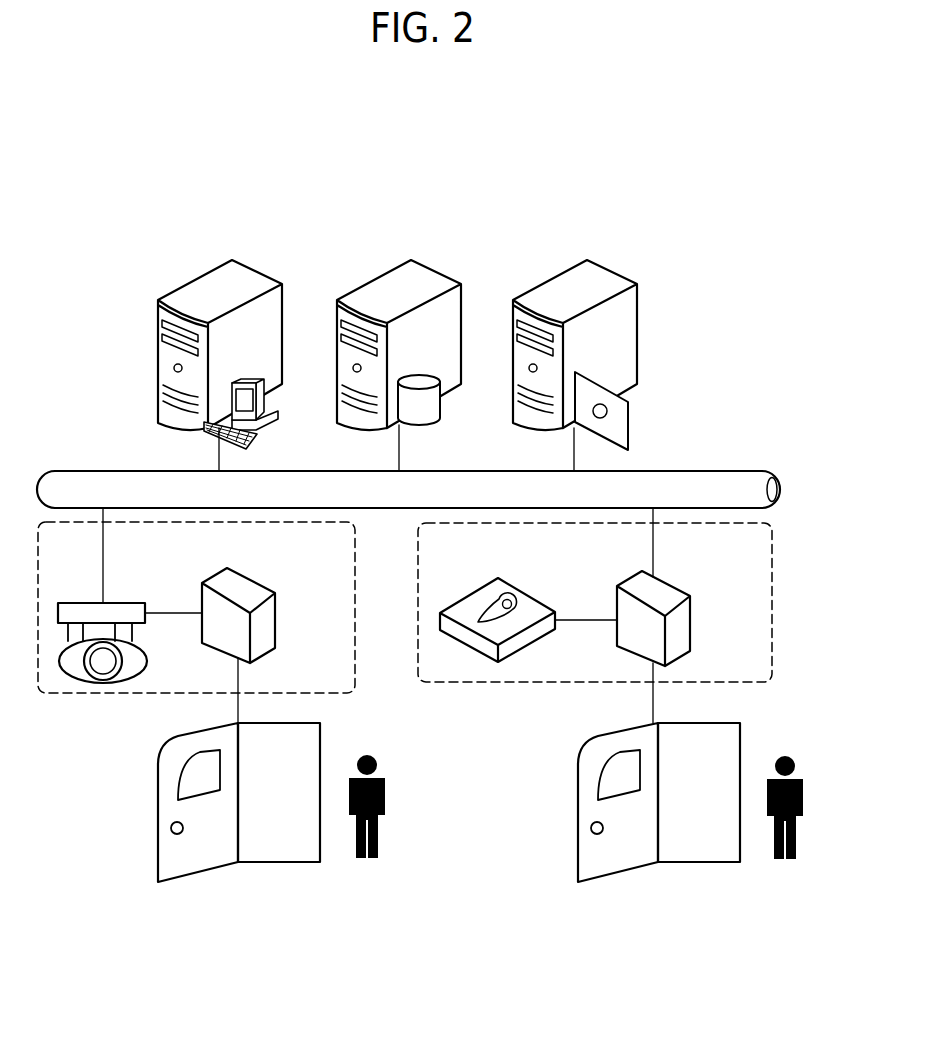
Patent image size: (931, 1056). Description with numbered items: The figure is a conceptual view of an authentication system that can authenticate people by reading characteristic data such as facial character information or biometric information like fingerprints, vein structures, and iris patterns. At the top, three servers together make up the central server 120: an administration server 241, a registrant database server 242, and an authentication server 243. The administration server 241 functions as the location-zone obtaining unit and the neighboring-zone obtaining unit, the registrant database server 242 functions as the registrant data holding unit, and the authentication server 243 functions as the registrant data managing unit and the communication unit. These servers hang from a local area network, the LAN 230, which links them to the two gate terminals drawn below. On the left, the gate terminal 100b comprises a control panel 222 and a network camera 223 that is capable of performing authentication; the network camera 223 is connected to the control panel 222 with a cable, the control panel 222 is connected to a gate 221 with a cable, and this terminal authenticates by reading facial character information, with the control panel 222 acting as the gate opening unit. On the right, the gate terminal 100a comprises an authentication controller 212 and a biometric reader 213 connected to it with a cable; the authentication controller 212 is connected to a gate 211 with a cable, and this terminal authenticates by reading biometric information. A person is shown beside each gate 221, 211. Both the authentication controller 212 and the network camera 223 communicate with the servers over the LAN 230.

The central server 120 is at (702, 225).
The administration server 241 is at (253, 269).
The registrant database server 242 is at (430, 269).
The authentication server 243 is at (606, 269).
The local area network (LAN) 230 is at (677, 471).
The gate terminal 100b is at (93, 694).
The network camera 223 is at (131, 603).
The control panel 222 is at (255, 581).
The gate 221 is at (273, 862).
The gate terminal 100a is at (490, 683).
The biometric reader 213 is at (512, 586).
The authentication controller 212 is at (673, 588).
The gate 211 is at (700, 862).